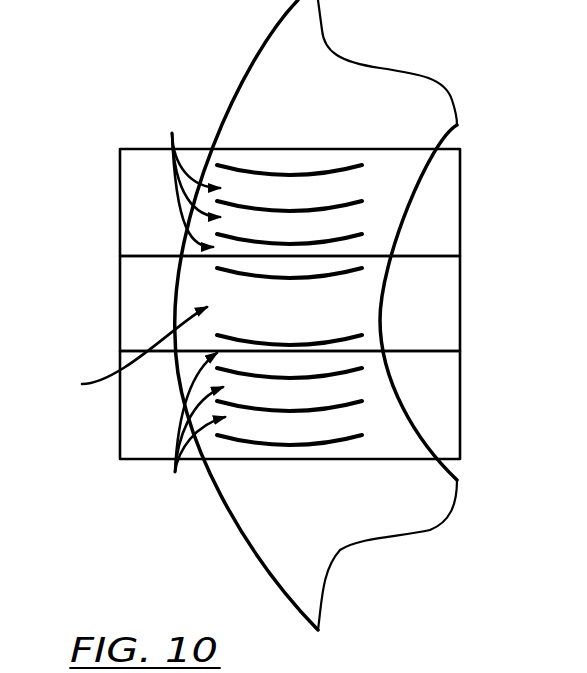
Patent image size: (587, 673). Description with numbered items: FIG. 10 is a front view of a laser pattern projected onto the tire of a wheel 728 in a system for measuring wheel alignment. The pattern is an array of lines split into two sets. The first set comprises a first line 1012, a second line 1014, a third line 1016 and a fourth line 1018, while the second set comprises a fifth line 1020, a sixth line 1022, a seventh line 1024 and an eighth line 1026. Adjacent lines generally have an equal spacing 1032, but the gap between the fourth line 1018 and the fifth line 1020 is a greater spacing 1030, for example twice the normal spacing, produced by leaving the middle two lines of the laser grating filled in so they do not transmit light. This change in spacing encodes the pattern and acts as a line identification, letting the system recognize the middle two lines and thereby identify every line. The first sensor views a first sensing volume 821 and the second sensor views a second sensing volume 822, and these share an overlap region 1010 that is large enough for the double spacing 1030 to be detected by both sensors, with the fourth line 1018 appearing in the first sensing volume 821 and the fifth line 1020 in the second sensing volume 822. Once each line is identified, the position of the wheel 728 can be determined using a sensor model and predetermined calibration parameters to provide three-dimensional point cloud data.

The wheel 728 is at (247, 87).
The first sensing volume 821 is at (125, 405).
The second sensing volume 822 is at (128, 200).
The overlap region 1010 is at (112, 255).
The first line 1012 is at (340, 170).
The second line 1014 is at (340, 206).
The third line 1016 is at (340, 239).
The fourth line 1018 is at (340, 273).
The fifth line 1020 is at (340, 340).
The sixth line 1022 is at (340, 373).
The seventh line 1024 is at (340, 406).
The eighth line 1026 is at (340, 440).
The greater spacing 1030 is at (116, 354).
The equal spacing 1032 is at (187, 303).